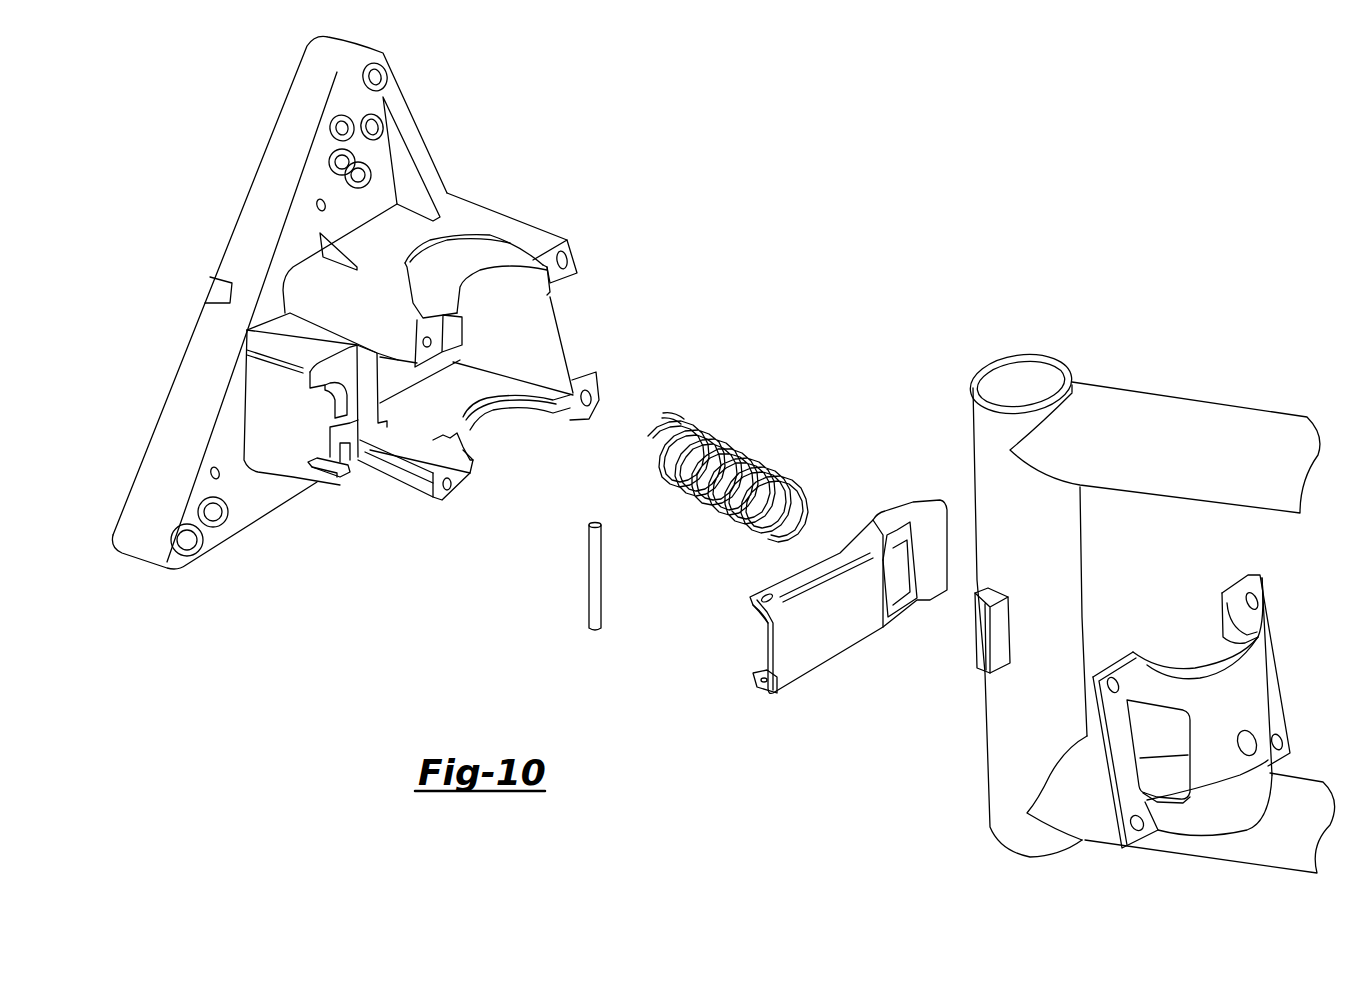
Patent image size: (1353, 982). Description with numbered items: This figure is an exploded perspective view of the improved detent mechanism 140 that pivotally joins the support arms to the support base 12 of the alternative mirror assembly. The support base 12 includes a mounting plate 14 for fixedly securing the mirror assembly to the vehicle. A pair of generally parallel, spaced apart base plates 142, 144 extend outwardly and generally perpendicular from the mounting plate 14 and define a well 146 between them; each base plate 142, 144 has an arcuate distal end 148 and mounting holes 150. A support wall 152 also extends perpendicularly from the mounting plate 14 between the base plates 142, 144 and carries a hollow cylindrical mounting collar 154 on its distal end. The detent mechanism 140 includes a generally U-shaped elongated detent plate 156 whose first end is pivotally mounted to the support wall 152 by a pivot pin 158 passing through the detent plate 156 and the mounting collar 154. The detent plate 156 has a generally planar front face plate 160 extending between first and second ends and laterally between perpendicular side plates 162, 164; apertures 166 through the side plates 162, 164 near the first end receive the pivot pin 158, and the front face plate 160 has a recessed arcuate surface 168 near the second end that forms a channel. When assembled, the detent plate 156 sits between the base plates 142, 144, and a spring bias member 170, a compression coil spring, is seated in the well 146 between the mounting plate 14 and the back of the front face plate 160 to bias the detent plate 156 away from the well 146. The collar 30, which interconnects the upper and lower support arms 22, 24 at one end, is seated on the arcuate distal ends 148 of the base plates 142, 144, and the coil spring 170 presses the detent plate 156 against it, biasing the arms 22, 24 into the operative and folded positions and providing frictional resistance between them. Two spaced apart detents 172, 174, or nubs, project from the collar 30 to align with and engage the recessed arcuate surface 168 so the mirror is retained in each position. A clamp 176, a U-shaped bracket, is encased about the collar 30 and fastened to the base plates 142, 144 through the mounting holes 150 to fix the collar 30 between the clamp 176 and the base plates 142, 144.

The support base 12 is at (413, 113).
The mounting plate 14 is at (260, 210).
The upper support arm 22 is at (1200, 420).
The lower support arm 24 is at (1290, 792).
The collar 30 is at (1037, 602).
The detent mechanism 140 is at (787, 398).
The base plate 142 is at (472, 203).
The base plate 144 is at (412, 490).
The well 146 is at (413, 430).
The arcuate distal end 148 is at (510, 277).
The mounting holes 150 is at (580, 255).
The support wall 152 is at (277, 433).
The mounting collar 154 is at (327, 473).
The detent plate 156 is at (809, 607).
The pivot pin 158 is at (590, 592).
The front face plate 160 is at (857, 627).
The side plate 162 is at (870, 517).
The side plate 164 is at (757, 693).
The apertures 166 is at (767, 677).
The recessed arcuate surface 168 is at (907, 587).
The spring bias member 170 is at (713, 437).
The detent 172 is at (965, 548).
The detent 174 is at (982, 641).
The clamp 176 is at (1272, 660).